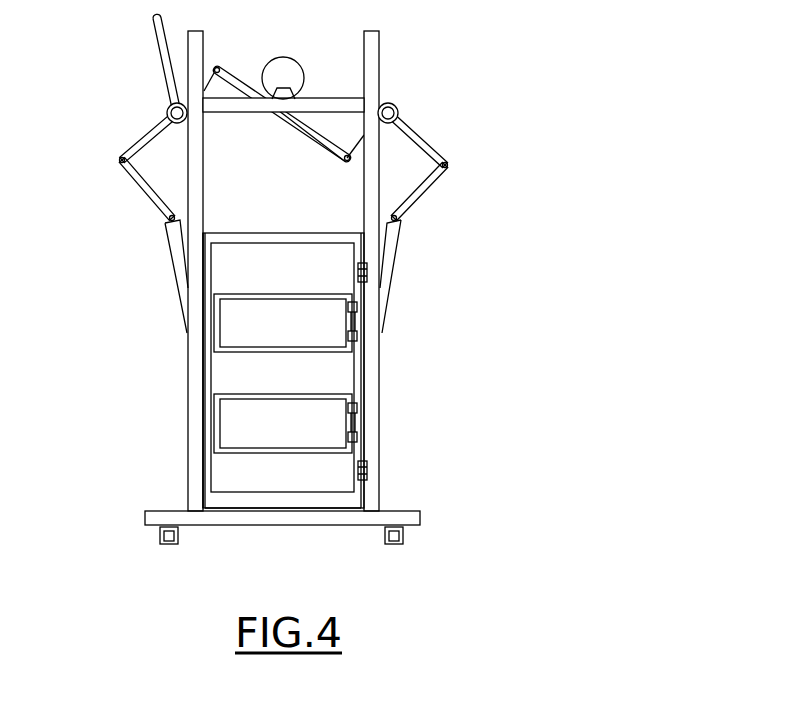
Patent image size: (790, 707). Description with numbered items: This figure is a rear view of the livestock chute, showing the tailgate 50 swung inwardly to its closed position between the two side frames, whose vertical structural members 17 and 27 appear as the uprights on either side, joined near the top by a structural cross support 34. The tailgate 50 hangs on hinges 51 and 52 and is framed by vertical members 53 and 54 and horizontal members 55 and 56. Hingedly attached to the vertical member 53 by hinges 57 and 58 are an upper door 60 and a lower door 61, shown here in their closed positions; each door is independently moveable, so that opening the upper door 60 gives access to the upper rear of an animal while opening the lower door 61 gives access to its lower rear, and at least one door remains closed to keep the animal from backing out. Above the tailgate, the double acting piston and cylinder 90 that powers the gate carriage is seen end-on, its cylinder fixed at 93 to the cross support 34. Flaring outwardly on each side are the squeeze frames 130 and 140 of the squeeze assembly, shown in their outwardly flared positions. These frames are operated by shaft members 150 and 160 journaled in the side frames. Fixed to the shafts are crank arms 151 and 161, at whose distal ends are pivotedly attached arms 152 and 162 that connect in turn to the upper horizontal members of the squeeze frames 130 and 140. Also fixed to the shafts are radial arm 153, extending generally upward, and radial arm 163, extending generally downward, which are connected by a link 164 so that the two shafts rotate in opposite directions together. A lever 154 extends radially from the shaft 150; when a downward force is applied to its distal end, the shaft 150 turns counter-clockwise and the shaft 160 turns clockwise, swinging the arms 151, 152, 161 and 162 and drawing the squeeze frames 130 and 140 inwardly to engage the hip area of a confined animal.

The vertical structural member 17 is at (195, 193).
The vertical structural member 27 is at (371, 183).
The structural cross support 34 is at (347, 110).
The tailgate 50 is at (249, 503).
The hinge 51 is at (368, 470).
The hinge 52 is at (357, 267).
The vertical member 53 is at (358, 372).
The vertical member 54 is at (207, 362).
The horizontal member 55 is at (275, 240).
The horizontal member 56 is at (307, 497).
The hinge 57 is at (357, 337).
The hinge 58 is at (357, 437).
The upper door 60 is at (283, 293).
The lower door 61 is at (292, 396).
The double acting piston and cylinder 90 is at (298, 64).
The cylinder fixing point 93 is at (296, 92).
The squeeze frame 130 is at (173, 270).
The squeeze frame 140 is at (404, 257).
The shaft member 150 is at (170, 108).
The crank arm 151 is at (147, 137).
The arm 152 is at (152, 207).
The radial arm 153 is at (229, 88).
The lever 154 is at (161, 35).
The shaft member 160 is at (398, 110).
The crank arm 161 is at (417, 140).
The arm 162 is at (412, 200).
The radial arm 163 is at (361, 147).
The link 164 is at (300, 128).